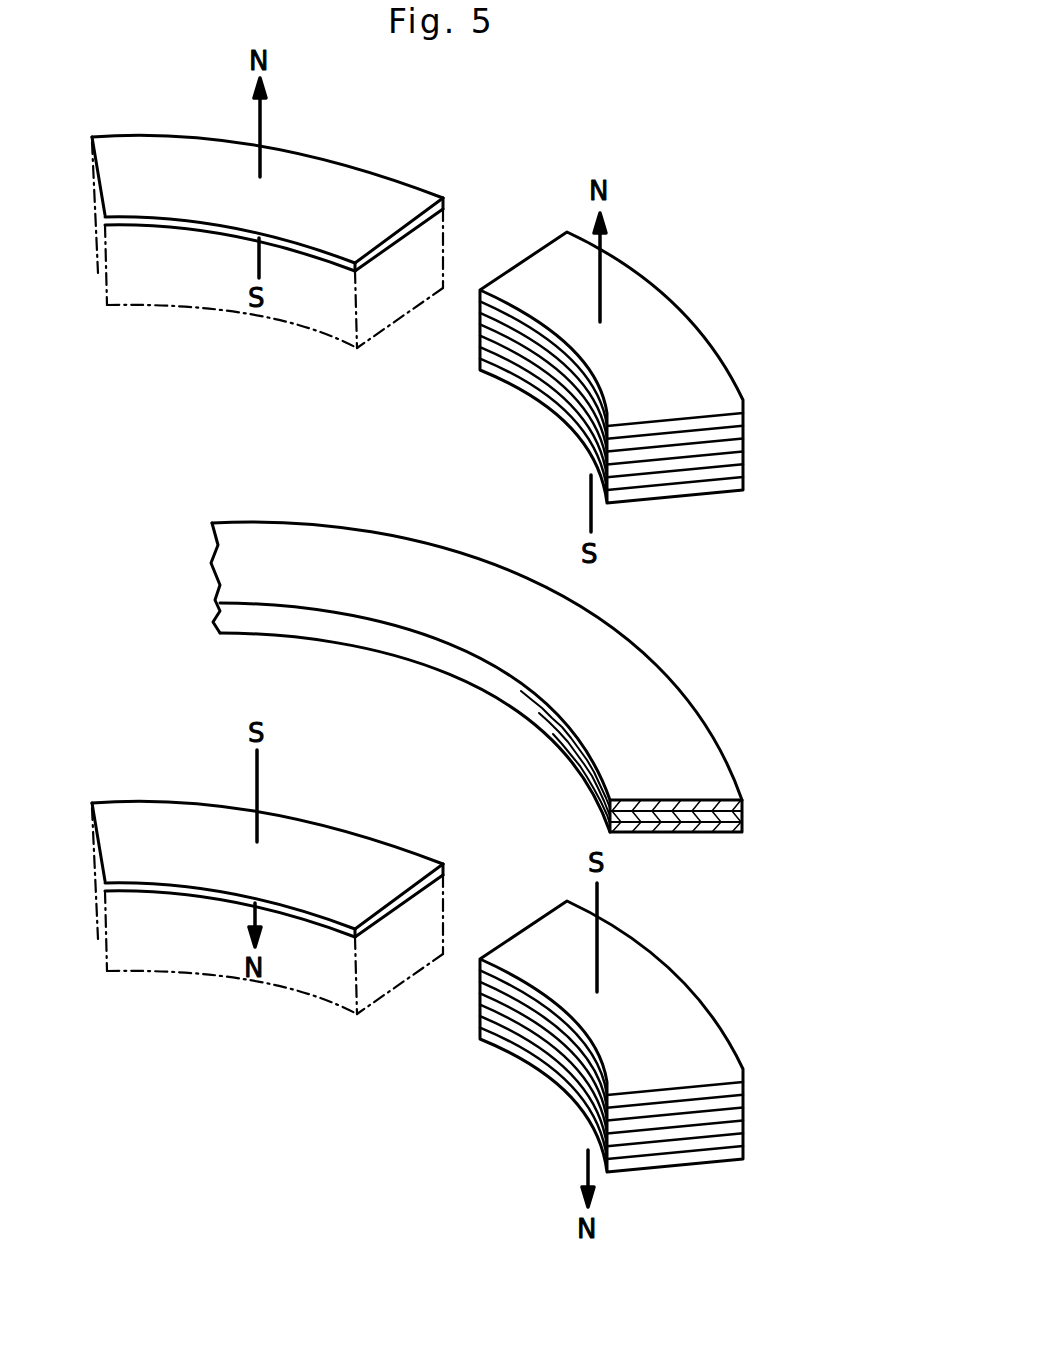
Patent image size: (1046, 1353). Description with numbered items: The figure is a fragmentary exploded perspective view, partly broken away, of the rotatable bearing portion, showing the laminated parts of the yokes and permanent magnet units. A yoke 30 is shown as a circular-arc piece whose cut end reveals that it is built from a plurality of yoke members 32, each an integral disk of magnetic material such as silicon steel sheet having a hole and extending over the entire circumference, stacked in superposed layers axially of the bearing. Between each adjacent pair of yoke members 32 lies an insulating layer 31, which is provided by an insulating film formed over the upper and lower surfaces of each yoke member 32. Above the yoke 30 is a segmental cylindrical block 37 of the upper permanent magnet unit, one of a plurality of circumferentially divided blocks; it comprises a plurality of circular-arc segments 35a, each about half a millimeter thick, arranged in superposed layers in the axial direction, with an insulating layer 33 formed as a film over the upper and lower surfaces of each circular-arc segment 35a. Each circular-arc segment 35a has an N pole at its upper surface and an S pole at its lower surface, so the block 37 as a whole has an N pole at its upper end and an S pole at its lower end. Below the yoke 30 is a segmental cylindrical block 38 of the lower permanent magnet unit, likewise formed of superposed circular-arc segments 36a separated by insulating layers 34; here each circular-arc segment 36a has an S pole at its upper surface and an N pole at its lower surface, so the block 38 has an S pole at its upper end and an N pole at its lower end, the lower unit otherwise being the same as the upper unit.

The yoke 30 is at (753, 658).
The insulating layer 31 is at (696, 831).
The yoke member 32 is at (745, 812).
The insulating layer 33 is at (727, 428).
The magnetic sheet lamination 34 is at (718, 1097).
The circular-arc segment 35a is at (378, 180).
The circular-arc segment 36a is at (355, 832).
The segmental cylindrical block 37 is at (160, 307).
The segmental cylindrical block 38 is at (160, 973).